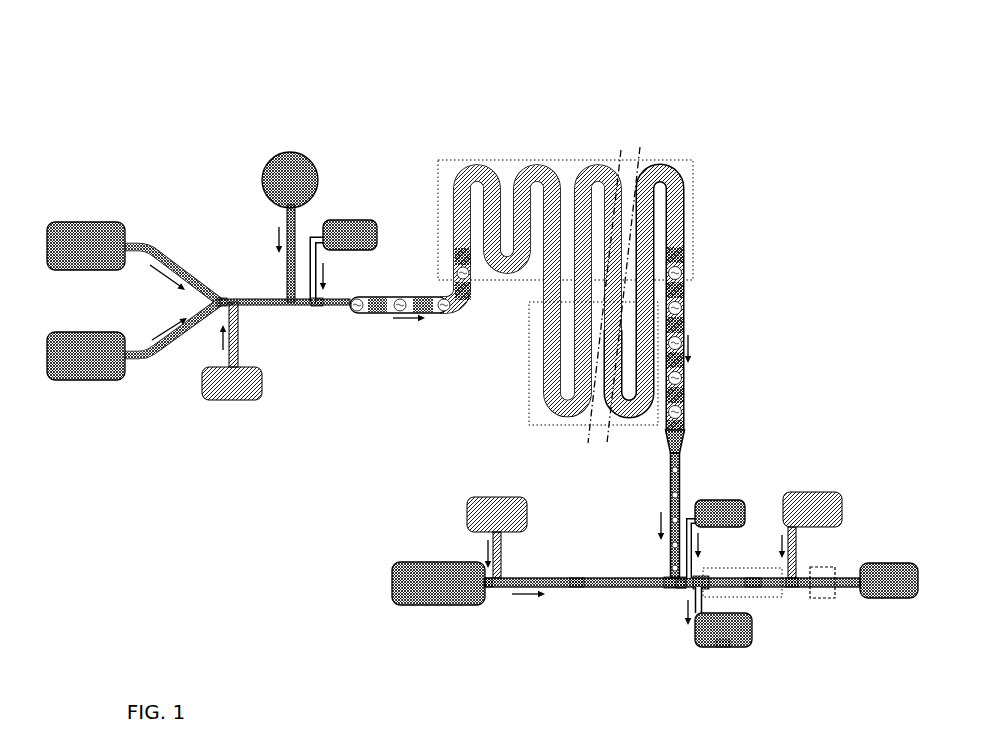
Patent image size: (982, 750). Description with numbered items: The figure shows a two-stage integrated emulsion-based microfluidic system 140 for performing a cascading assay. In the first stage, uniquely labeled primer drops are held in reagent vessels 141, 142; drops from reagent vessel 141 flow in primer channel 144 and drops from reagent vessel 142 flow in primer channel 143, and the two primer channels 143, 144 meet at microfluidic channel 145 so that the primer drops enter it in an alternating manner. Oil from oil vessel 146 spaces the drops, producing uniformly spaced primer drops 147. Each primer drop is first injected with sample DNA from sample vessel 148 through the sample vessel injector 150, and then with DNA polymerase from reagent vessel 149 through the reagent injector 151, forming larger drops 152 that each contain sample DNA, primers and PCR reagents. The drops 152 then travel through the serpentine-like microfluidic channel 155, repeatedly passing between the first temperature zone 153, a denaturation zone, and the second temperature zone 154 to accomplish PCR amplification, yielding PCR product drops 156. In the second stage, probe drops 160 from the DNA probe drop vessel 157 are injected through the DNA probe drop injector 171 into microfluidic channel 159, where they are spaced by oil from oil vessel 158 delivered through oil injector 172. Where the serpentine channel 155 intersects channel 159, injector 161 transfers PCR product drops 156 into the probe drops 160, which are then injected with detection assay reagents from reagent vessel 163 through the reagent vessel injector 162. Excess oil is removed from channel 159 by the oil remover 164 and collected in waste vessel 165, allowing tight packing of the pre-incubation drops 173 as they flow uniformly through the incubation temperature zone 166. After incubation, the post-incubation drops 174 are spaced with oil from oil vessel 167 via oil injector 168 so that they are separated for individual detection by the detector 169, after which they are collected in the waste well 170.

The system 140 is at (192, 29).
The reagent vessel 141 is at (80, 222).
The reagent vessel 142 is at (95, 380).
The primer channel 143 is at (173, 350).
The primer channel 144 is at (168, 248).
The microfluidic channel 145 is at (224, 296).
The oil vessel 146 is at (250, 400).
The uniformly spaced primer drops 147 is at (245, 310).
The sample vessel 148 is at (300, 152).
The reagent vessel 149 is at (363, 220).
The sample vessel injector 150 is at (274, 296).
The reagent injector 151 is at (320, 307).
The drops 152 is at (388, 297).
The first temperature zone 153 is at (457, 160).
The second temperature zone 154 is at (529, 398).
The serpentine-like microfluidic channel 155 is at (613, 162).
The PCR product drops 156 is at (683, 293).
The DNA probe drop vessel 157 is at (392, 580).
The oil vessel 158 is at (505, 497).
The microfluidic channel 159 is at (566, 578).
The probe drops 160 is at (575, 590).
The injector 161 is at (668, 578).
The reagent vessel injector 162 is at (672, 592).
The reagent vessel 163 is at (725, 500).
The oil remover 164 is at (703, 578).
The waste vessel 165 is at (697, 645).
The incubation temperature zone 166 is at (753, 593).
The oil vessel 167 is at (815, 492).
The oil injector 168 is at (797, 590).
The detector 169 is at (835, 598).
The waste well 170 is at (893, 565).
The DNA probe drop injector 171 is at (490, 595).
The oil injector 172 is at (503, 574).
The pre-incubation drops 173 is at (723, 648).
The post-incubation drops 174 is at (780, 598).